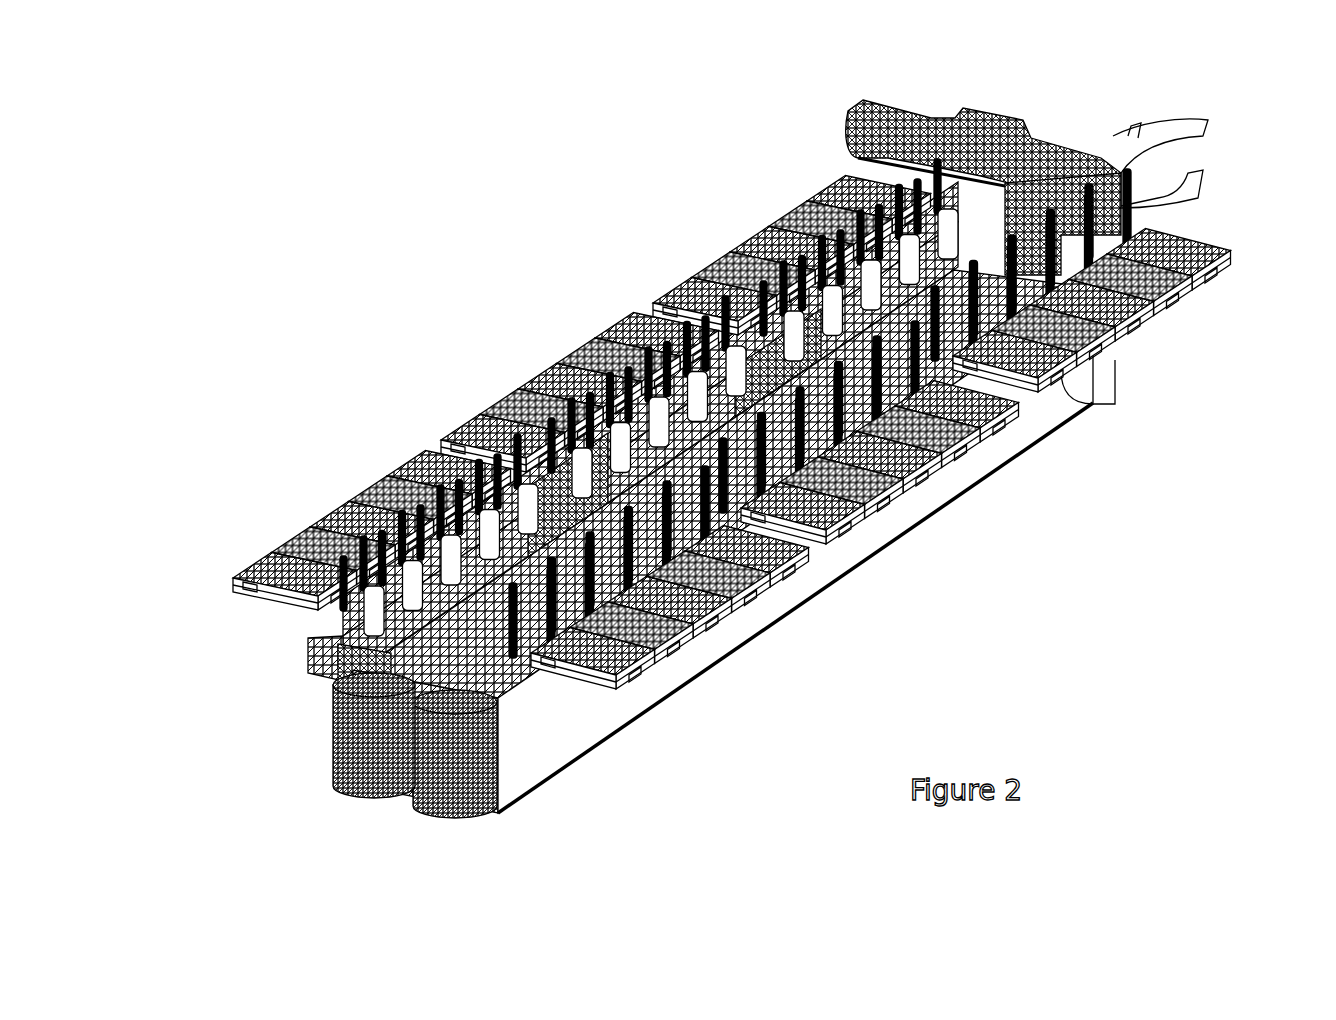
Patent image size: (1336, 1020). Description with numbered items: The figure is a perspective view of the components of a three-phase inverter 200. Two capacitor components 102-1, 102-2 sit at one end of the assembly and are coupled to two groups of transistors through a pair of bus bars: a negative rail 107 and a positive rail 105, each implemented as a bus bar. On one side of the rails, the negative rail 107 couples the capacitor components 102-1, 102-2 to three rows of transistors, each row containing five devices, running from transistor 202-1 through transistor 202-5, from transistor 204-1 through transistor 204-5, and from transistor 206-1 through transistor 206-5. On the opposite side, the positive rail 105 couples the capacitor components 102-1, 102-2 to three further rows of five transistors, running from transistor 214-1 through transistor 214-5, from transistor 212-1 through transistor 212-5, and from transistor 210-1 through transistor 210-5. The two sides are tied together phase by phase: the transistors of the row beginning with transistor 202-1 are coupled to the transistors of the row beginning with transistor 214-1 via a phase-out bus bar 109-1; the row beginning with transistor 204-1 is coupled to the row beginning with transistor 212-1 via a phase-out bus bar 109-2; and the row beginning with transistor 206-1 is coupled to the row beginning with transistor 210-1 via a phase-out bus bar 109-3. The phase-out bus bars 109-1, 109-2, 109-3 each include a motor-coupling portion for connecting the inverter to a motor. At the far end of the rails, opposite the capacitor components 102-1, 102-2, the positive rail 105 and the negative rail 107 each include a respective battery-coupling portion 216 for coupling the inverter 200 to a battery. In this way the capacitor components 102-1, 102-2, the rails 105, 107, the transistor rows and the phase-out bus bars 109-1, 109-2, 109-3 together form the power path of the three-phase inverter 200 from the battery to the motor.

The three-phase inverter 200 is at (298, 133).
The capacitor component 102-1 is at (328, 769).
The capacitor component 102-2 is at (418, 794).
The positive rail 105 is at (535, 738).
The negative rail 107 is at (332, 645).
The phase-out bus bar 109-1 is at (330, 664).
The phase-out bus bar 109-2 is at (548, 425).
The phase-out bus bar 109-3 is at (795, 335).
The transistor 202-1 is at (255, 567).
The transistor 202-5 is at (398, 468).
The transistor 204-1 is at (470, 428).
The transistor 204-5 is at (614, 332).
The transistor 206-1 is at (668, 295).
The transistor 206-5 is at (830, 188).
The transistor 210-1 is at (1066, 387).
The transistor 210-5 is at (1200, 273).
The transistor 212-1 is at (853, 533).
The transistor 212-5 is at (988, 433).
The transistor 214-1 is at (630, 662).
The transistor 214-5 is at (775, 575).
The battery-coupling portion 216 is at (1195, 115).